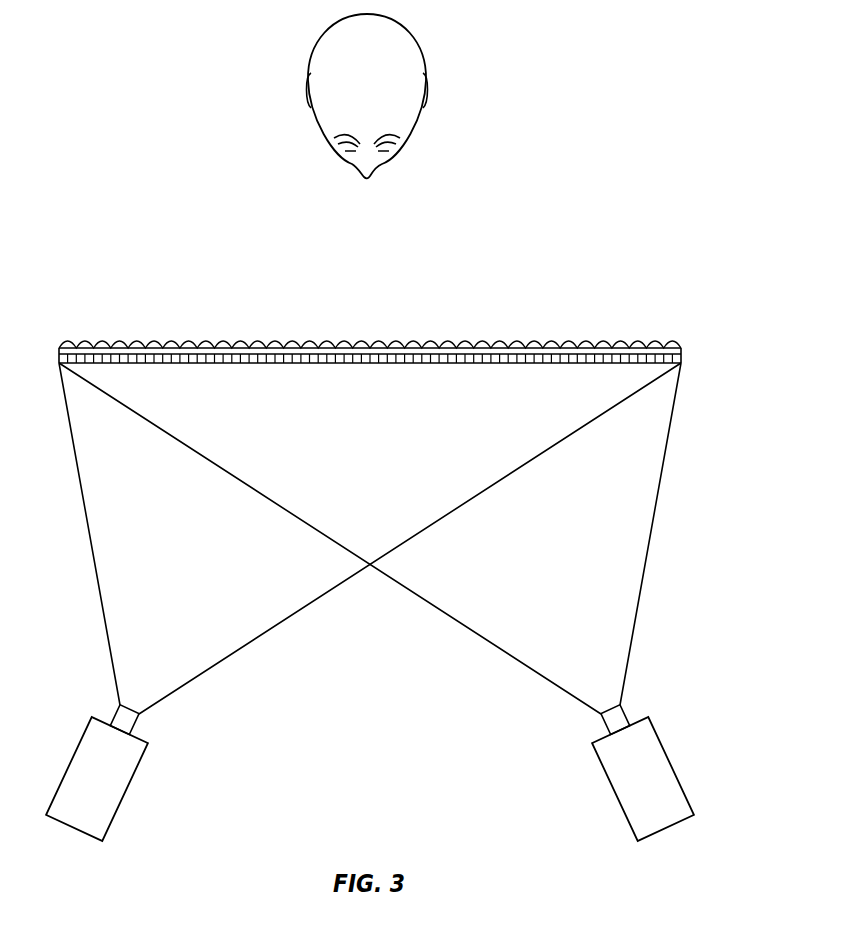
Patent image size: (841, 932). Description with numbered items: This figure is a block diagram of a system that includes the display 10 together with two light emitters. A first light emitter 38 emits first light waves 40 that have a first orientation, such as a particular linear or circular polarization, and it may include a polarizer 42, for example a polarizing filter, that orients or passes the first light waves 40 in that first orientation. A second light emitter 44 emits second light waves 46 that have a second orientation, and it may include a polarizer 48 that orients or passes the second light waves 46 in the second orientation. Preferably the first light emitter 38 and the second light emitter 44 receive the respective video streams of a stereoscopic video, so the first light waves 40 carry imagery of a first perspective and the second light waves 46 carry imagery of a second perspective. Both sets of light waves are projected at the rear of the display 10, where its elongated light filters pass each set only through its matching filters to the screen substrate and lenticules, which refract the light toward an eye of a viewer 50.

The display 10 is at (683, 352).
The first light emitter 38 is at (83, 793).
The first light waves 40 is at (181, 563).
The polarizer 42 is at (141, 717).
The second light emitter 44 is at (631, 792).
The second light waves 46 is at (522, 561).
The polarizer 48 is at (626, 712).
The viewer 50 is at (421, 50).